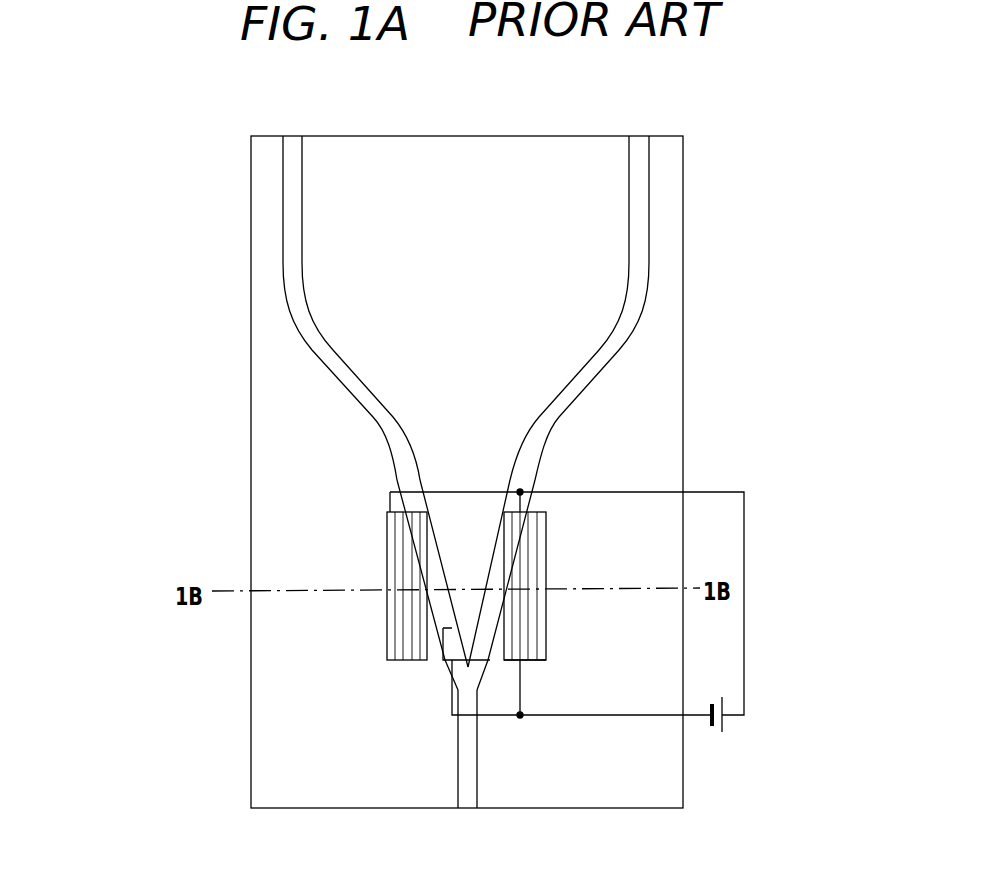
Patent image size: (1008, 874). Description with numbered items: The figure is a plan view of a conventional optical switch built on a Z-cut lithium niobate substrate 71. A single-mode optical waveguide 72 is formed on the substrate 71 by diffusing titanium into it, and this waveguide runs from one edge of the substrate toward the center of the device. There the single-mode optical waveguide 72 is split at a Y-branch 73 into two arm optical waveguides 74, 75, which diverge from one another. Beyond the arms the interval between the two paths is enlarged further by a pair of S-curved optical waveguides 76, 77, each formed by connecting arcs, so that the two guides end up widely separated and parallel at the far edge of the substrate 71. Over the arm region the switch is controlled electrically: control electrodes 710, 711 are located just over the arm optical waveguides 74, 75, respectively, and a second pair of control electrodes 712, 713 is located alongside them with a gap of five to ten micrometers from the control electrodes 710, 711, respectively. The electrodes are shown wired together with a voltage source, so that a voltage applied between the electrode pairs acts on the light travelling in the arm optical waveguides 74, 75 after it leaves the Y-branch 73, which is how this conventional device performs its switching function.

The substrate 71 is at (491, 136).
The single-mode optical waveguide 72 is at (478, 765).
The Y-branch 73 is at (475, 674).
The arm optical waveguide 74 is at (521, 517).
The arm optical waveguide 75 is at (420, 530).
The S-curved optical waveguide 76 is at (637, 321).
The S-curved optical waveguide 77 is at (330, 372).
The control electrode 710 is at (495, 605).
The control electrode 711 is at (442, 632).
The control electrode 712 is at (545, 542).
The control electrode 713 is at (390, 615).